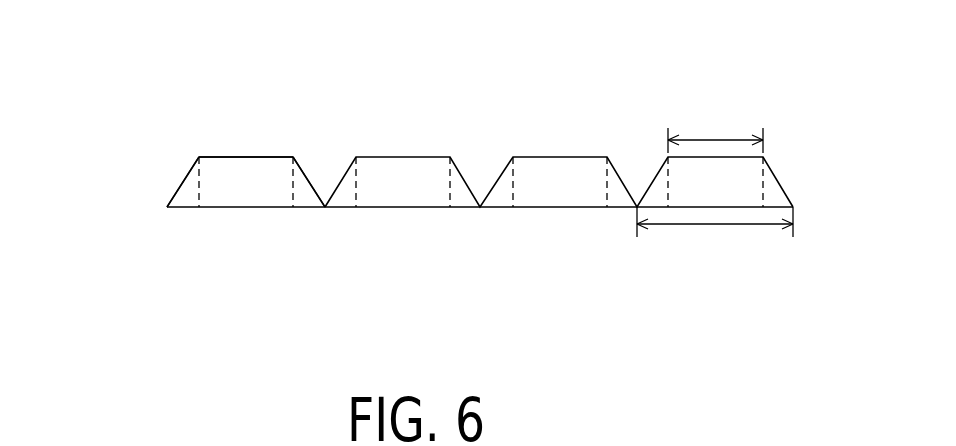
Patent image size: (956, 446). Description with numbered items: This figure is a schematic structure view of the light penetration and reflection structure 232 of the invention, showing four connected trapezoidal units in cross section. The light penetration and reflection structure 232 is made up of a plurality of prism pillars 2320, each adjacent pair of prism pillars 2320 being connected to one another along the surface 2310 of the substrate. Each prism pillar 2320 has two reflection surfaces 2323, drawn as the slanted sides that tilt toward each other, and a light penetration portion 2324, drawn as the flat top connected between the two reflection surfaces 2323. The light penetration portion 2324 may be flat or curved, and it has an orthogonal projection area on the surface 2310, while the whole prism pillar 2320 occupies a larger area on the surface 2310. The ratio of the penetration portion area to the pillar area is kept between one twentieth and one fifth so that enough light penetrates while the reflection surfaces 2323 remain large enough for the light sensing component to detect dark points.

The light penetration and reflection structure 232 is at (817, 58).
The surface of the substrate 2310 is at (620, 208).
The prism pillar 2320 is at (325, 212).
The reflection surface 2323 is at (183, 180).
The light penetration portion 2324 is at (250, 157).